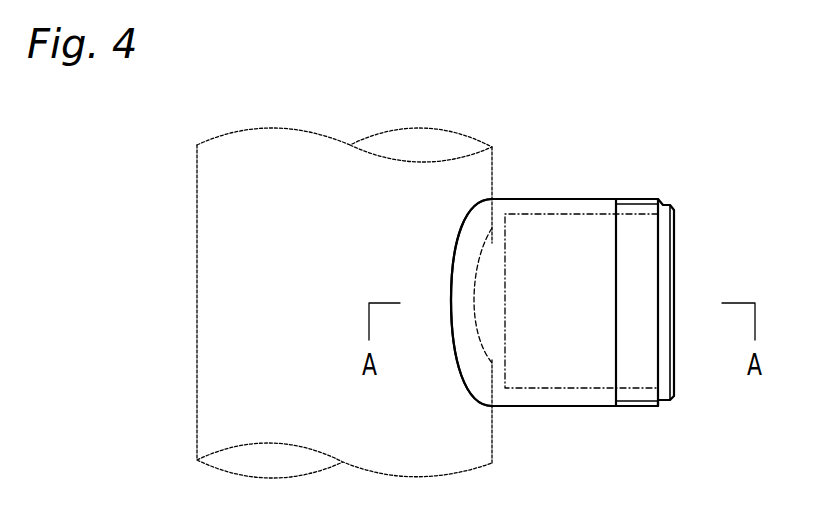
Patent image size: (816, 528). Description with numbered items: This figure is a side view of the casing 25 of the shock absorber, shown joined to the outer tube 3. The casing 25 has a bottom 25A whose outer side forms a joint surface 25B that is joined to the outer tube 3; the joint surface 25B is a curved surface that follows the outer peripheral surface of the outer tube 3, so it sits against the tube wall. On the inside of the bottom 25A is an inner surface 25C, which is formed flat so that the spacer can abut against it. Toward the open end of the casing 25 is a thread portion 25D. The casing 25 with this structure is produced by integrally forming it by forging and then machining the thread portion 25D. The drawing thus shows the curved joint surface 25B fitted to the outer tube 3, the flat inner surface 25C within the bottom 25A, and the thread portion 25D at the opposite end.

The outer tube 3 is at (197, 242).
The casing 25 is at (572, 199).
The bottom 25A is at (493, 228).
The joint surface 25B is at (458, 360).
The inner surface 25C is at (531, 213).
The thread portion 25D is at (637, 199).